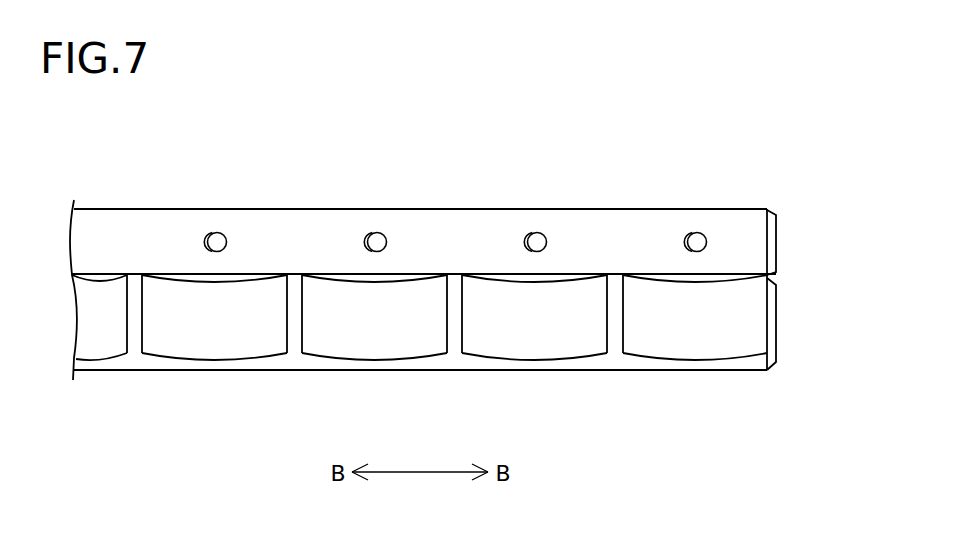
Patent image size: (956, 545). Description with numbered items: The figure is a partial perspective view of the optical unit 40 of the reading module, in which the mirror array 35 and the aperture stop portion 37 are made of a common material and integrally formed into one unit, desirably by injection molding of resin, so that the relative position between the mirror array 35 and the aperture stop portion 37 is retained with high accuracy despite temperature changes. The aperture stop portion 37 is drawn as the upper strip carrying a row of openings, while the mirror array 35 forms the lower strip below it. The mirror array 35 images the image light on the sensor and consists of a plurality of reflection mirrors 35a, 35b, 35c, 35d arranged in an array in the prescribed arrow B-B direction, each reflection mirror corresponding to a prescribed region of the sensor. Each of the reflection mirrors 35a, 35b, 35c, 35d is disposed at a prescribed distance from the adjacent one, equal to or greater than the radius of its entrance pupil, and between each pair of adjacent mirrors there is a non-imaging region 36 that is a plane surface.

The optical unit 40 is at (757, 175).
The aperture stop portion 37 is at (216, 232).
The mirror array 35 is at (450, 356).
The reflection mirror 35a is at (703, 340).
The reflection mirror 35b is at (532, 340).
The reflection mirror 35c is at (372, 340).
The reflection mirror 35d is at (212, 340).
The non-imaging region 36 is at (133, 343).